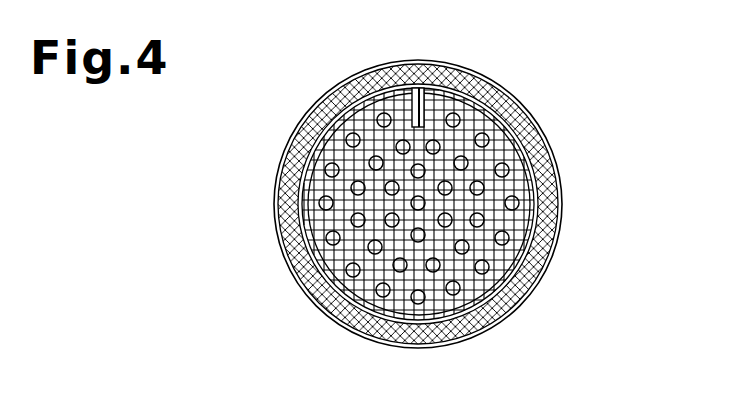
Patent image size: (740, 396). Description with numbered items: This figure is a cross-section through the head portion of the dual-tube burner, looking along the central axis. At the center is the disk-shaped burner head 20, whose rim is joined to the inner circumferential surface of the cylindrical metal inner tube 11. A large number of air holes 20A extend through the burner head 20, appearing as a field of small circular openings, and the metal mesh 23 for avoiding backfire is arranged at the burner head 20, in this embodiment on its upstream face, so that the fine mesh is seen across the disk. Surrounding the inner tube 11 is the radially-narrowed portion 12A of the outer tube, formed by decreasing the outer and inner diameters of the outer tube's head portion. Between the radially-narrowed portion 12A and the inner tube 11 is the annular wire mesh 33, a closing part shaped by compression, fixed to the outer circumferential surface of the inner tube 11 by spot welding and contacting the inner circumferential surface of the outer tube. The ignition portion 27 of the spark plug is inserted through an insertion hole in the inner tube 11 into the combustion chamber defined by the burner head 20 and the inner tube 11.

The inner tube 11 is at (558, 205).
The radially-narrowed portion 12A is at (541, 122).
The burner head 20 is at (548, 151).
The air holes 20A is at (544, 254).
The metal mesh 23 is at (510, 114).
The ignition portion 27 is at (353, 83).
The wire mesh 33 is at (560, 178).